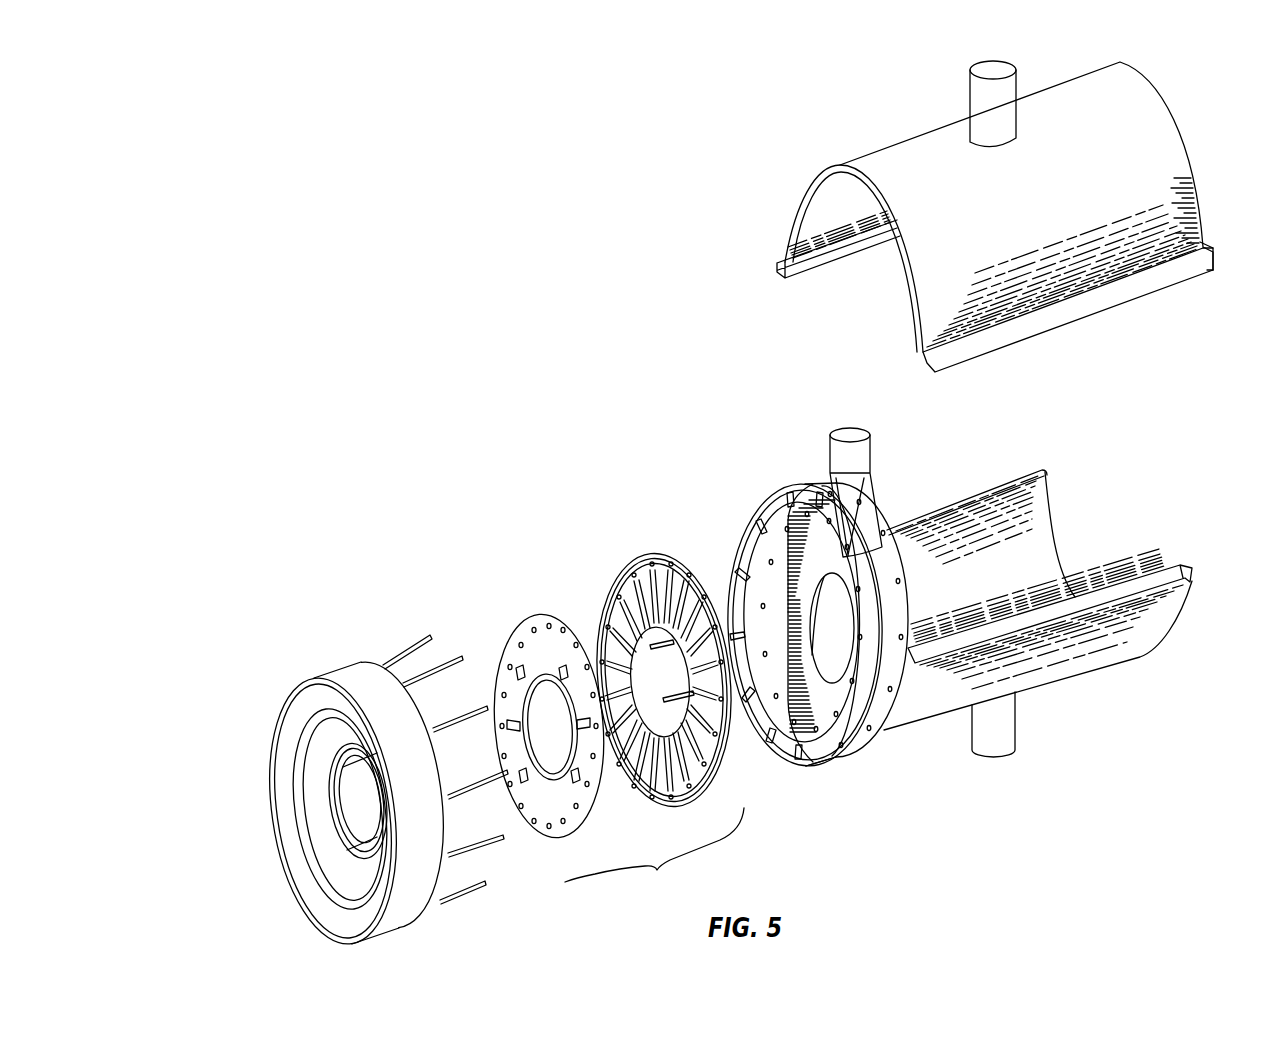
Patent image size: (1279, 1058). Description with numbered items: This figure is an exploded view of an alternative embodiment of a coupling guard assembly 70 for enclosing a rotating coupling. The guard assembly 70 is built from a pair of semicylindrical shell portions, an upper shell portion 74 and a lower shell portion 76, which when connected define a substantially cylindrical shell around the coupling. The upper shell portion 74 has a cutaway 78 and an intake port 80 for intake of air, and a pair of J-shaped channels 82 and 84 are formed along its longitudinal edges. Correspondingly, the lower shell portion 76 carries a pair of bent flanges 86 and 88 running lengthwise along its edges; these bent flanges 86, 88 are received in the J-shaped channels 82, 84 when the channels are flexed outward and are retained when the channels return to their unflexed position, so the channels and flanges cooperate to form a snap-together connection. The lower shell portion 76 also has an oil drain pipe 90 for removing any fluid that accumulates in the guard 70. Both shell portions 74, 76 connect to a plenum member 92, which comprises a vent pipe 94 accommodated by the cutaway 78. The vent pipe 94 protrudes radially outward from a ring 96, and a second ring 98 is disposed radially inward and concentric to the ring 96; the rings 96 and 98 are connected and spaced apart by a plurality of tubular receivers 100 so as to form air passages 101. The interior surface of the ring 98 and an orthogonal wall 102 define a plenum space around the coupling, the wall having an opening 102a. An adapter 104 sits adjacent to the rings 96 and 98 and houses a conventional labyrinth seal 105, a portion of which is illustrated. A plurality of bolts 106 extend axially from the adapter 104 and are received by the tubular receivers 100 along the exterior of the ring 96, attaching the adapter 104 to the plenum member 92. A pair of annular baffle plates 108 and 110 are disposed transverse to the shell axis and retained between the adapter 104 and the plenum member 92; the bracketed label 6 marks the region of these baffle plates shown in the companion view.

The section view reference (rotor assembly) 6 is at (654, 853).
The coupling guard assembly 70 is at (504, 445).
The upper shell portion 74 is at (1080, 201).
The lower shell portion 76 is at (970, 695).
The cutaway 78 is at (886, 212).
The intake port 80 is at (994, 68).
The J-shaped channel 82 is at (1215, 252).
The J-shaped channel 84 is at (776, 262).
The bent flange 86 is at (1160, 563).
The bent flange 88 is at (1043, 468).
The oil drain pipe 90 is at (1006, 742).
The plenum member 92 is at (790, 480).
The vent pipe 94 is at (857, 458).
The ring 96 is at (896, 668).
The second ring 98 is at (789, 668).
The tubular receivers 100 is at (828, 753).
The air passages 101 is at (745, 531).
The orthogonal wall 102 is at (808, 690).
The opening 102a is at (812, 655).
The adapter 104 is at (367, 672).
The labyrinth seal 105 is at (337, 857).
The bolts 106 is at (467, 897).
The annular baffle plate 108 is at (541, 845).
The annular baffle plate 110 is at (684, 817).